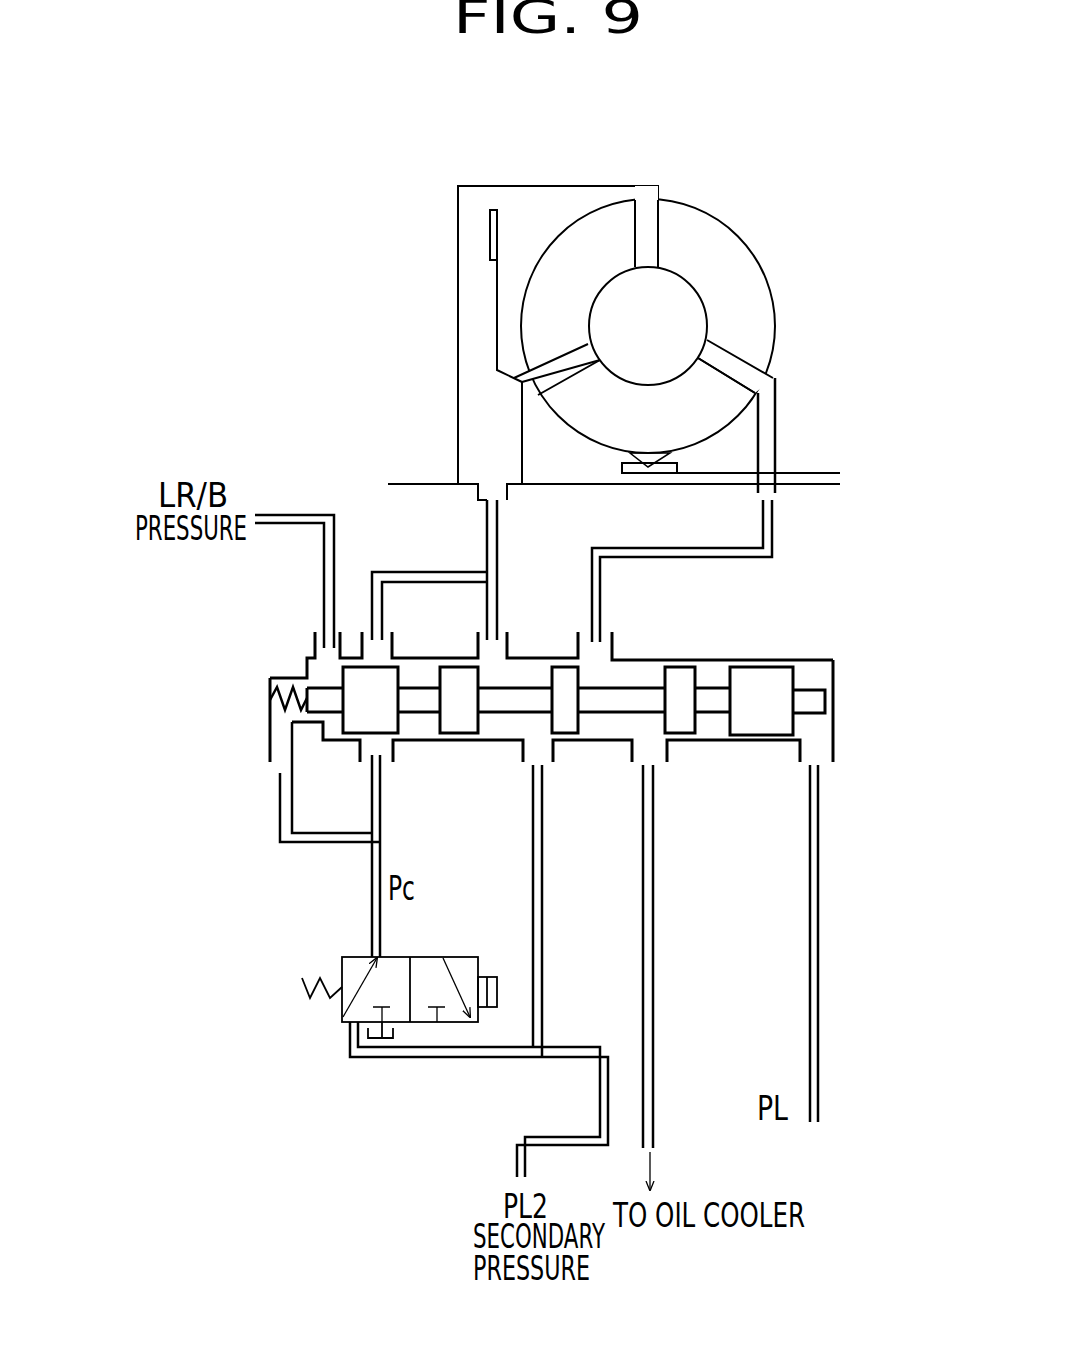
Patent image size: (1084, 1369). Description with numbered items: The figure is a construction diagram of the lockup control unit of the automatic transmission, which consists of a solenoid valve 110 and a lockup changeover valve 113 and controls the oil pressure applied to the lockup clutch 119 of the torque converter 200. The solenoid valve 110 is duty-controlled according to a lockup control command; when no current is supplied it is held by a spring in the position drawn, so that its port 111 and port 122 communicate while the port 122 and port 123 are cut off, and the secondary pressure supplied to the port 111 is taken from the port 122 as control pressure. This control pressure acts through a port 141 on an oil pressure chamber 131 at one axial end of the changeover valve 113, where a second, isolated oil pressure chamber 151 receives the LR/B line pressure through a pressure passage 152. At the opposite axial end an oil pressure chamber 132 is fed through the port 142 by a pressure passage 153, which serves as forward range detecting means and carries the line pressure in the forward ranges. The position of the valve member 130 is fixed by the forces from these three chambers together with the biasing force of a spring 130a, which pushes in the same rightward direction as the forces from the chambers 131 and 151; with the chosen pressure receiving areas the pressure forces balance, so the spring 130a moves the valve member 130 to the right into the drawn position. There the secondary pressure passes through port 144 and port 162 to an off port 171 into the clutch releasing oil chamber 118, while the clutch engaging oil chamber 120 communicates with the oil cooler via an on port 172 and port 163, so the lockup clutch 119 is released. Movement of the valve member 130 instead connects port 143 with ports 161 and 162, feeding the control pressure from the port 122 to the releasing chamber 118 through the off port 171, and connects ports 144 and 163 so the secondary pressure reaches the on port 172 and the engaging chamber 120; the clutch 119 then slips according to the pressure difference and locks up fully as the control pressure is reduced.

The clutch engaging oil chamber 120 is at (547, 207).
The torque converter 200 is at (685, 202).
The lockup clutch 119 is at (490, 225).
The clutch releasing oil chamber 118 is at (475, 287).
The on port 172 is at (773, 500).
The off port 171 is at (483, 503).
The port 161 is at (393, 647).
The pressure passage 152 is at (302, 513).
The oil pressure chamber 131 is at (290, 677).
The port 162 is at (510, 648).
The port 163 is at (617, 648).
The lockup changeover valve 113 is at (723, 658).
The oil pressure chamber 132 is at (820, 673).
The port 141 is at (268, 748).
The port 143 is at (395, 755).
The port 144 is at (558, 753).
The port 142 is at (837, 753).
The valve member 130 is at (777, 667).
The spring 130a is at (275, 700).
The oil pressure chamber 151 is at (332, 740).
The port 122 is at (382, 940).
The pressure passage 153 is at (818, 892).
The solenoid valve 110 is at (340, 1012).
The port 123 is at (400, 1028).
The port 111 is at (487, 1057).